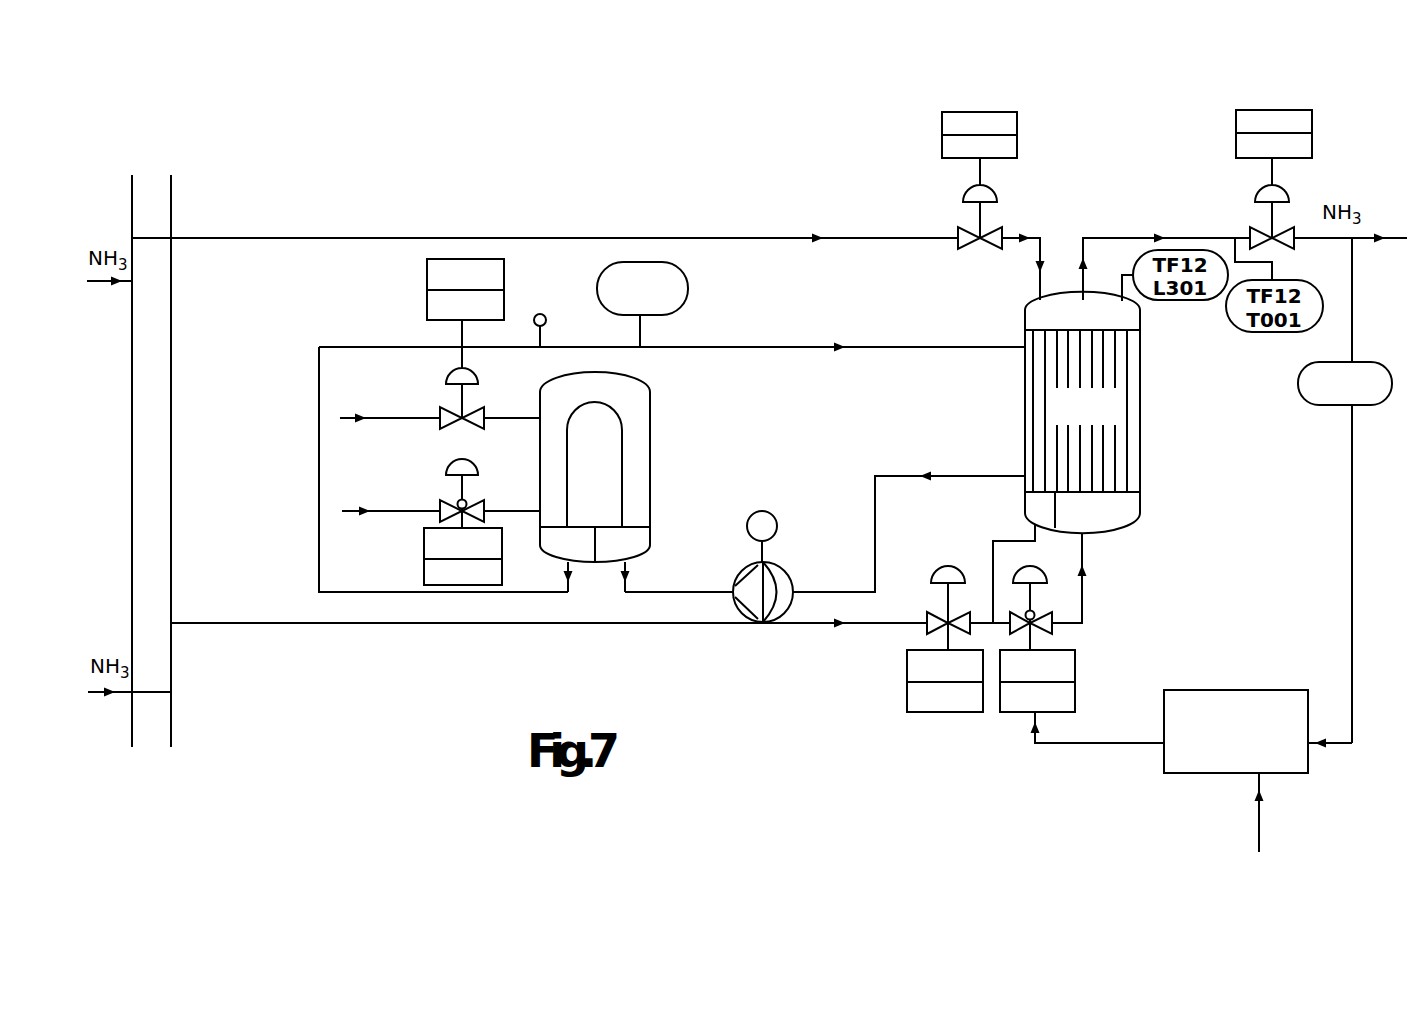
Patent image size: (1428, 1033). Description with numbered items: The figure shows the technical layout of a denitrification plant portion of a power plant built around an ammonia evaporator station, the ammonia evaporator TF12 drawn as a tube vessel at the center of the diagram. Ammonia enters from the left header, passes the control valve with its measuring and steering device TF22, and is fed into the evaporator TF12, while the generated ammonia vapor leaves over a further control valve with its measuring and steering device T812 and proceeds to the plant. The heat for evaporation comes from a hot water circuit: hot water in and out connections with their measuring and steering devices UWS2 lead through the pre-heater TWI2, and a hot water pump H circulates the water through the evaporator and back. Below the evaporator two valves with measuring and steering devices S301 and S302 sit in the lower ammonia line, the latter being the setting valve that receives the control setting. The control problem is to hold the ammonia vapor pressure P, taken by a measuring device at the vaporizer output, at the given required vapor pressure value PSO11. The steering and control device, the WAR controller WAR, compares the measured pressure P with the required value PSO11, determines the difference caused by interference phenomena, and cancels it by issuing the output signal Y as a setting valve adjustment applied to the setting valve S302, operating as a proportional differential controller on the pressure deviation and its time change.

The measuring and steering device (TF22 S301) with valve TF22 is at (942, 120).
The measuring and steering device (T812 S301) with valve T812 is at (1236, 120).
The ammonia vapor pressure P is at (1250, 392).
The NH3 evaporator TF12 is at (1060, 452).
The hot water connections with measuring and steering devices UWS2 is at (397, 640).
The pre-heater VORWAR TWI2 is at (495, 203).
The hot water pump H is at (740, 570).
The measuring and steering device TF12 S301 is at (1000, 712).
The setting valve TF12 S302 is at (1040, 625).
The controller output signal Y is at (1098, 742).
The WAR controller WAR is at (1258, 731).
The required vapor pressure value PSO11 is at (1292, 812).